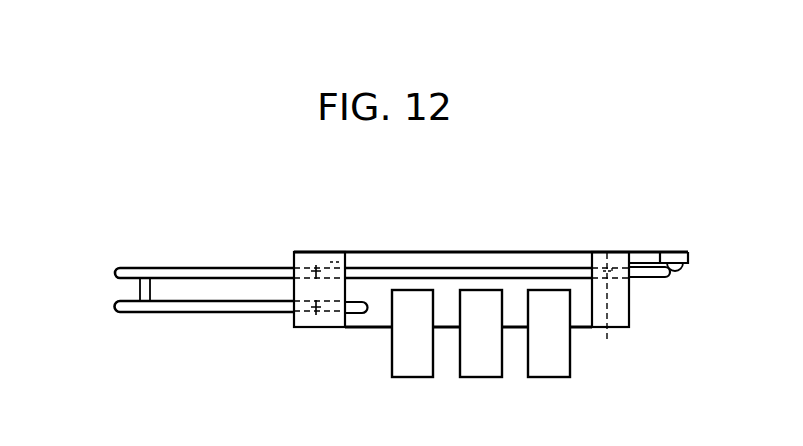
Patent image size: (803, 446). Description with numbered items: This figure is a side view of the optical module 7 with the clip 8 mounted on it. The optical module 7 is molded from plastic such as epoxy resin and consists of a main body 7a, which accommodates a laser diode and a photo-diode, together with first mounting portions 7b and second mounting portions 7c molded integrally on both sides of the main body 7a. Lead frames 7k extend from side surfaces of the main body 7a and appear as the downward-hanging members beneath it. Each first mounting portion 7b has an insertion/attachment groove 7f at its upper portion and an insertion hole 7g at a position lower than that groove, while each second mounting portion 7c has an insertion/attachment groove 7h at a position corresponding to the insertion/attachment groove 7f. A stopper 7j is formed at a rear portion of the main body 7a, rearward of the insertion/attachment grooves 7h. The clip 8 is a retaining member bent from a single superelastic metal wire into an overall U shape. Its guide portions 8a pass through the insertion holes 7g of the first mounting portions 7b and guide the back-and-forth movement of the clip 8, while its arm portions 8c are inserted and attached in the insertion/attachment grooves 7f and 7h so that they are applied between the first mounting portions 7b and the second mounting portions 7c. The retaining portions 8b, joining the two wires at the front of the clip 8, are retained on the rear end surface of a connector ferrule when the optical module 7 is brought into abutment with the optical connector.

The optical module 7 is at (523, 247).
The main body 7a is at (470, 258).
The first mounting portion 7b is at (333, 258).
The second mounting portion 7c is at (606, 253).
The insertion/attachment groove 7f is at (305, 250).
The insertion hole 7g is at (318, 330).
The insertion/attachment groove 7h is at (613, 316).
The stopper 7j is at (677, 272).
The lead frame 7k is at (533, 378).
The clip 8 is at (125, 258).
The guide portion 8a is at (250, 314).
The retaining portion 8b is at (142, 291).
The arm portion 8c is at (412, 272).